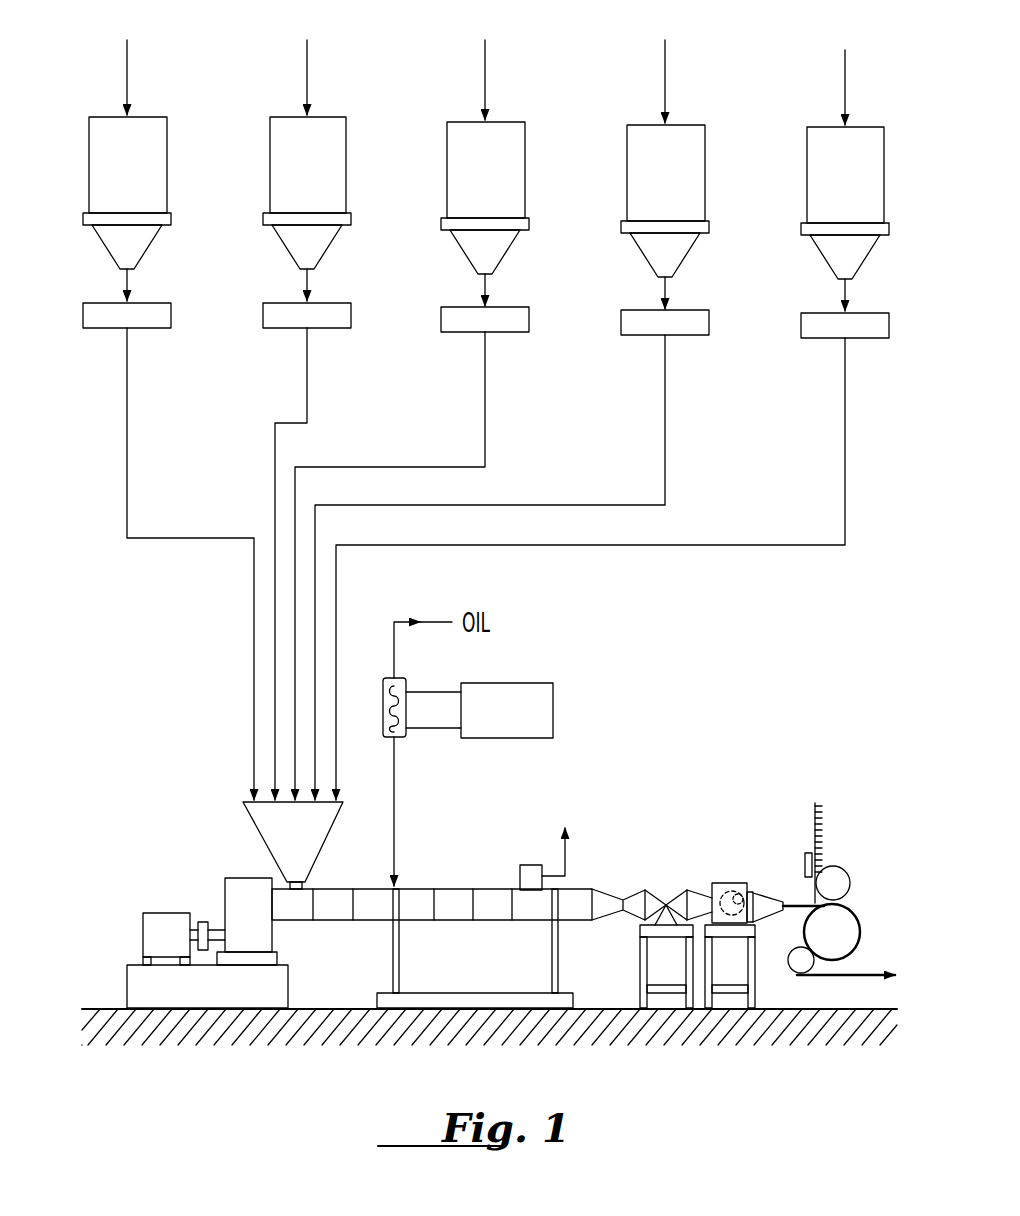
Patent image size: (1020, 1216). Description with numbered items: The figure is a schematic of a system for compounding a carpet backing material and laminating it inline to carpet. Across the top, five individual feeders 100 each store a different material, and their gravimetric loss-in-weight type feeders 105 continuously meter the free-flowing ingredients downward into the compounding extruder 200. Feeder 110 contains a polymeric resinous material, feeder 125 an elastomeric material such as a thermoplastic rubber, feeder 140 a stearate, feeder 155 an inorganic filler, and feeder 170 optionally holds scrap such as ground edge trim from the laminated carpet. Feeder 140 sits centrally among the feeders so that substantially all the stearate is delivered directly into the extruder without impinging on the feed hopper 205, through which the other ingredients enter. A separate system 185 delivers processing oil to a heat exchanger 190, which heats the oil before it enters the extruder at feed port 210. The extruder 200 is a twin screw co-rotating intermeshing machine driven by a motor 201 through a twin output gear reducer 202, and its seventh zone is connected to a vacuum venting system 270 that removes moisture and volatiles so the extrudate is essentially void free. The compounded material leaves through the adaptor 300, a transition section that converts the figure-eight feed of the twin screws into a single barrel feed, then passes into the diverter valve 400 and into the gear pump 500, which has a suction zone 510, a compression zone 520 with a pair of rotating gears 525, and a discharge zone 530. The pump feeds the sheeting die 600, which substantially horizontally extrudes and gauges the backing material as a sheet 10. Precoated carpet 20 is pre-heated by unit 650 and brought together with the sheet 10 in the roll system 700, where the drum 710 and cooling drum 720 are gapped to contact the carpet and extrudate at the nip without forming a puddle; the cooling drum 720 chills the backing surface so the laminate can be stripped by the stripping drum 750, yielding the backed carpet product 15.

The sheet 10 is at (795, 908).
The backed carpet product 15 is at (857, 978).
The carpet 20 is at (818, 810).
The feeders 100 is at (265, 165).
The loss-in-weight type feeders 105 is at (173, 315).
The feeder 110 is at (112, 160).
The feeder 125 is at (325, 182).
The feeder 140 is at (473, 165).
The feeder 155 is at (680, 197).
The feeder 170 is at (862, 193).
The system 185 is at (503, 677).
The heat exchanger 190 is at (403, 737).
The compounding extruder 200 is at (195, 840).
The motor 201 is at (158, 937).
The twin output gear reducer 202 is at (216, 912).
The feed hopper 205 is at (312, 845).
The feed port 210 is at (400, 887).
The vacuum venting system 270 is at (528, 857).
The adaptor 300 is at (600, 903).
The diverter valve 400 is at (663, 888).
The gear pump 500 is at (728, 835).
The suction zone 510 is at (713, 900).
The compression zone 520 is at (733, 890).
The rotating gears 525 is at (725, 892).
The discharge zone 530 is at (750, 883).
The sheeting die 600 is at (768, 897).
The unit 650 is at (807, 853).
The roll system 700 is at (856, 910).
The drum 710 is at (832, 873).
The cooling drum 720 is at (847, 933).
The stripping drum 750 is at (797, 970).